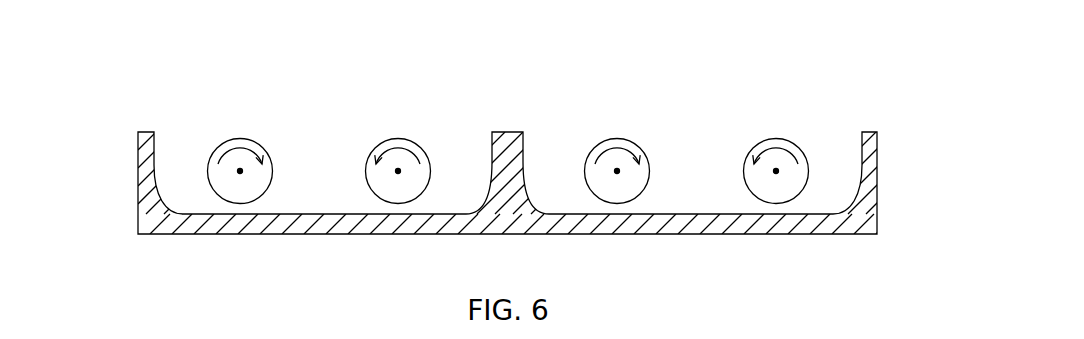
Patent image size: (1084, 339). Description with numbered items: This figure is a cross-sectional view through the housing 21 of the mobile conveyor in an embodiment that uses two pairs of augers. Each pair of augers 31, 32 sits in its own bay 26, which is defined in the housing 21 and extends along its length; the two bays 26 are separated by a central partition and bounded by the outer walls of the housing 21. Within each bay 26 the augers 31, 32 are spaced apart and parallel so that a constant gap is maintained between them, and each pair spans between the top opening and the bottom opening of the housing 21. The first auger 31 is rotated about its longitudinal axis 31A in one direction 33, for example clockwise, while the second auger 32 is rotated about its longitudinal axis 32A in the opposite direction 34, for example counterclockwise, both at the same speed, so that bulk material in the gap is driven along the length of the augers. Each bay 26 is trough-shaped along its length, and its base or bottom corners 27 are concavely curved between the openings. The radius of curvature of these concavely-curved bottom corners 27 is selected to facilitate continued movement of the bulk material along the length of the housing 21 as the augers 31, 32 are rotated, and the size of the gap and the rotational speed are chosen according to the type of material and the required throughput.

The housing 21 is at (139, 183).
The bay 26 is at (330, 213).
The concavely-curved bottom corners 27 is at (172, 212).
The auger 31 is at (240, 138).
The auger 32 is at (392, 139).
The longitudinal axis of auger 31A is at (240, 171).
The longitudinal axis of auger 32A is at (398, 171).
The rotation direction 33 is at (258, 150).
The rotation direction 34 is at (414, 150).